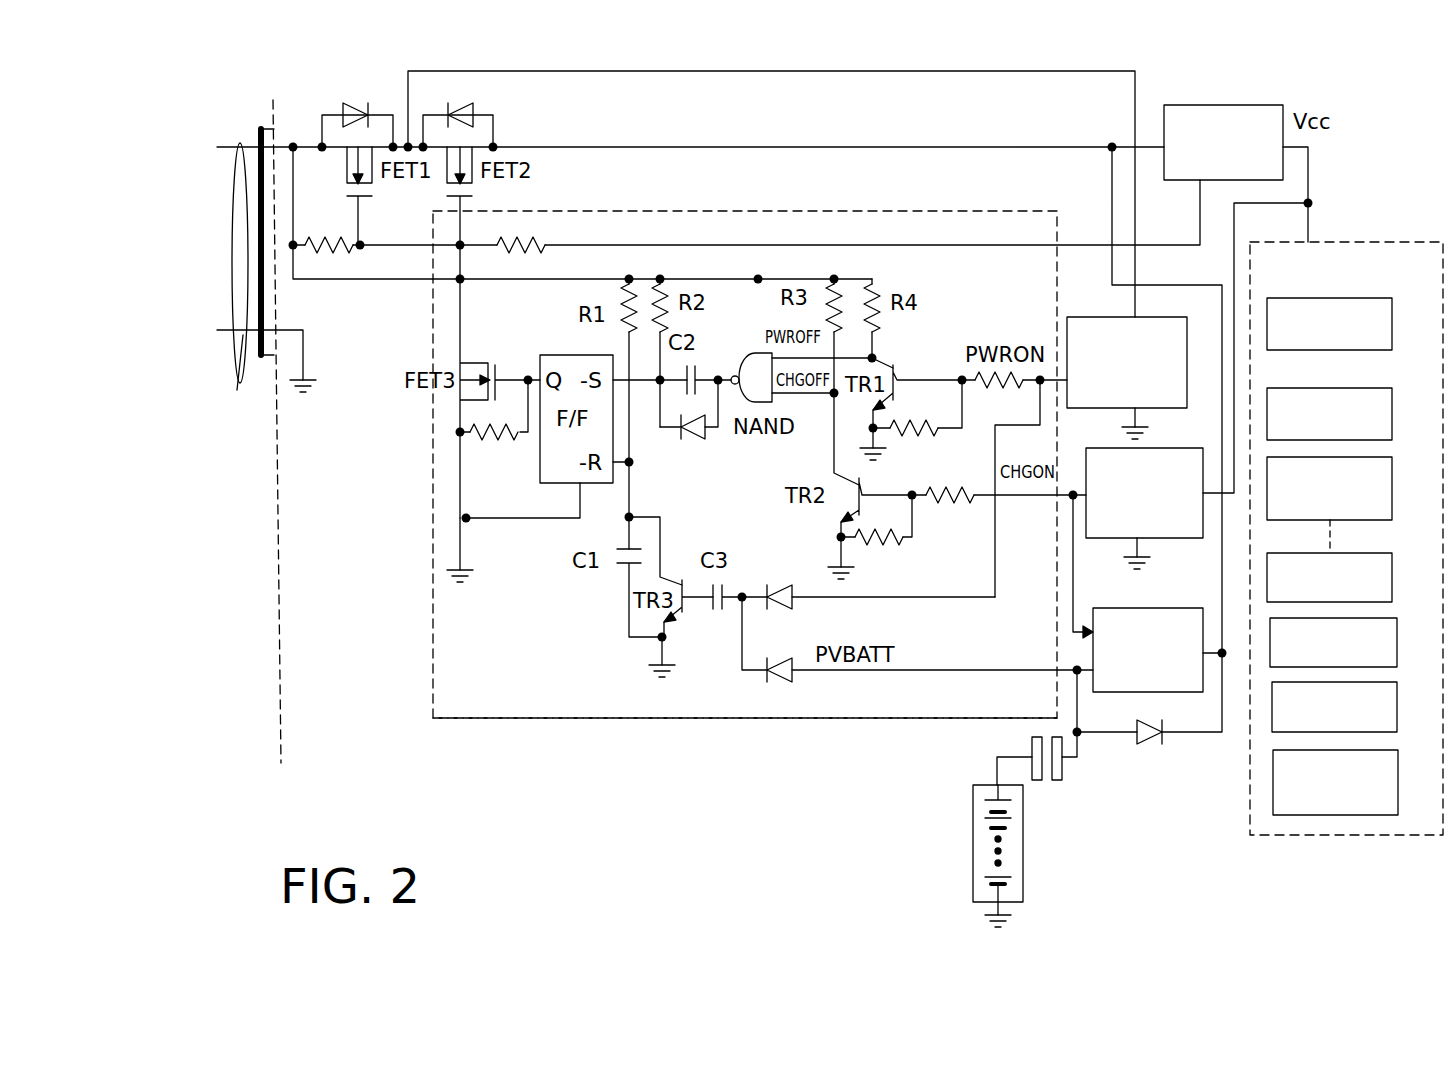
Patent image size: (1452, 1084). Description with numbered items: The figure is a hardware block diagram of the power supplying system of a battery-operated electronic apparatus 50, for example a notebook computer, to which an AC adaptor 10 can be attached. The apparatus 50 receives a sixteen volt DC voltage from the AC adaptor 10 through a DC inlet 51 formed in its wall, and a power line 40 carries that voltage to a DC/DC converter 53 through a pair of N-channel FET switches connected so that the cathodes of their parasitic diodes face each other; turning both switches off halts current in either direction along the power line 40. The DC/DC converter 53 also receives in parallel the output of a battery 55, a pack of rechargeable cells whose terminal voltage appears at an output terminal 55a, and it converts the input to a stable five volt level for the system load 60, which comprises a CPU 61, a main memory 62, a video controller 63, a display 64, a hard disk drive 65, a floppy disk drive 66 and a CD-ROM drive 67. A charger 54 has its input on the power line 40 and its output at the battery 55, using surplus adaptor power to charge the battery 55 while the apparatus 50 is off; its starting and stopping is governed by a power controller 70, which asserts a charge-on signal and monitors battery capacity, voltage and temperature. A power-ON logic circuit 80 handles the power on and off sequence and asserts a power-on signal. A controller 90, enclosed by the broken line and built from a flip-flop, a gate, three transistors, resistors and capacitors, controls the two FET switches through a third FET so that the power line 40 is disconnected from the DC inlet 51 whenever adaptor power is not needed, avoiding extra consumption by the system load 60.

The DC inlet 51 is at (263, 128).
The AC adaptor 10 is at (221, 431).
The power line 40 is at (817, 147).
The DC/DC converter 53 is at (1212, 104).
The system load 60 is at (1393, 240).
The CPU 61 is at (1392, 310).
The main memory 62 is at (1392, 393).
The video controller 63 is at (1392, 482).
The display 64 is at (1392, 572).
The hard disk drive 65 is at (1397, 640).
The floppy disk drive 66 is at (1397, 705).
The CD-ROM drive 67 is at (1398, 770).
The power-ON logic circuit 80 is at (1097, 317).
The power controller 70 is at (1108, 447).
The charger 54 is at (1170, 607).
The battery 55 is at (973, 833).
The output terminal 55a is at (1060, 790).
The electronic apparatus 50 is at (583, 733).
The controller 90 is at (433, 662).